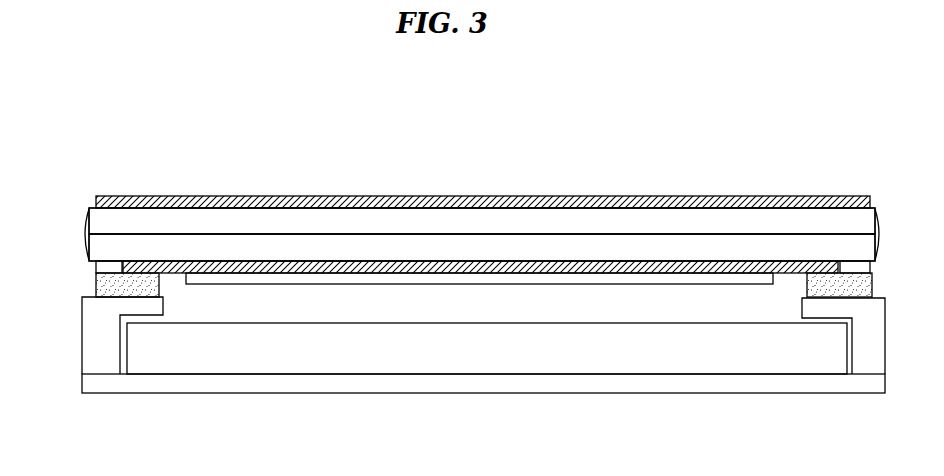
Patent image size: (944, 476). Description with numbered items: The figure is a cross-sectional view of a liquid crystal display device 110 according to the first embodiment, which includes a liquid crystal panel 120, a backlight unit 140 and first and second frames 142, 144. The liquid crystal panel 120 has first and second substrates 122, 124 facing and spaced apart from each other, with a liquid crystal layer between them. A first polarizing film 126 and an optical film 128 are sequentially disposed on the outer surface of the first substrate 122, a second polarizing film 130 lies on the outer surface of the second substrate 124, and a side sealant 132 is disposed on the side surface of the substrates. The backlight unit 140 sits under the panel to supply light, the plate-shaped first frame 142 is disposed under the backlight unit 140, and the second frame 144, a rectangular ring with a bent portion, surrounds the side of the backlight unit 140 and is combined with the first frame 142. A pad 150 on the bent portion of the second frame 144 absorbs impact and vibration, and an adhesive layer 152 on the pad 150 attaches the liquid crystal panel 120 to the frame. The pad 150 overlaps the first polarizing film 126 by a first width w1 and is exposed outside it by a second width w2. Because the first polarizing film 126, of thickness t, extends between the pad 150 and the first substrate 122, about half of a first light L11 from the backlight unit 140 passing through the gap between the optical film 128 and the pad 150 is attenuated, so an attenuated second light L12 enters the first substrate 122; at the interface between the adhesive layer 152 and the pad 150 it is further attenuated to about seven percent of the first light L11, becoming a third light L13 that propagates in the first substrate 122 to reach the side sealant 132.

The liquid crystal display device 110 is at (472, 76).
The liquid crystal panel 120 is at (167, 150).
The first substrate 122 is at (268, 250).
The second substrate 124 is at (220, 220).
The first polarizing film 126 is at (322, 268).
The optical film 128 is at (368, 278).
The second polarizing film 130 is at (167, 196).
The side sealant 132 is at (82, 225).
The backlight unit 140 is at (232, 360).
The first frame 142 is at (175, 383).
The second frame 144 is at (101, 366).
The pad 150 is at (100, 280).
The adhesive layer 152 is at (95, 264).
The thickness of first polarizing film t is at (733, 296).
The first light L11 is at (804, 274).
The second light L12 is at (858, 270).
The third light L13 is at (858, 270).
The first width w1 is at (808, 298).
The second width w2 is at (871, 298).